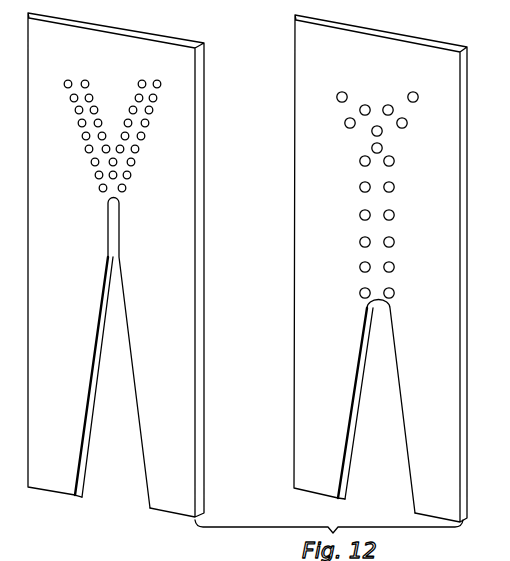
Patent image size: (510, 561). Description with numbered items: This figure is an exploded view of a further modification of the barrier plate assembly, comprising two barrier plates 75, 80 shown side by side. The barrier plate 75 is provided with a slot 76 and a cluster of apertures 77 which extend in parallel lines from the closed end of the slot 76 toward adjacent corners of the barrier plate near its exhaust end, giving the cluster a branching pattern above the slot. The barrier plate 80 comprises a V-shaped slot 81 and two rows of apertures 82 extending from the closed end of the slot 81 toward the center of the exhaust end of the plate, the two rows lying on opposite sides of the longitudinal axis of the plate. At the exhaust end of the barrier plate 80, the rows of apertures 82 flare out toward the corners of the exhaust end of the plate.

The barrier plate 75 is at (147, 45).
The slot 76 is at (124, 349).
The apertures 77 is at (149, 124).
The barrier plate 80 is at (415, 50).
The V-shaped slot 81 is at (391, 366).
The apertures 82 is at (395, 241).